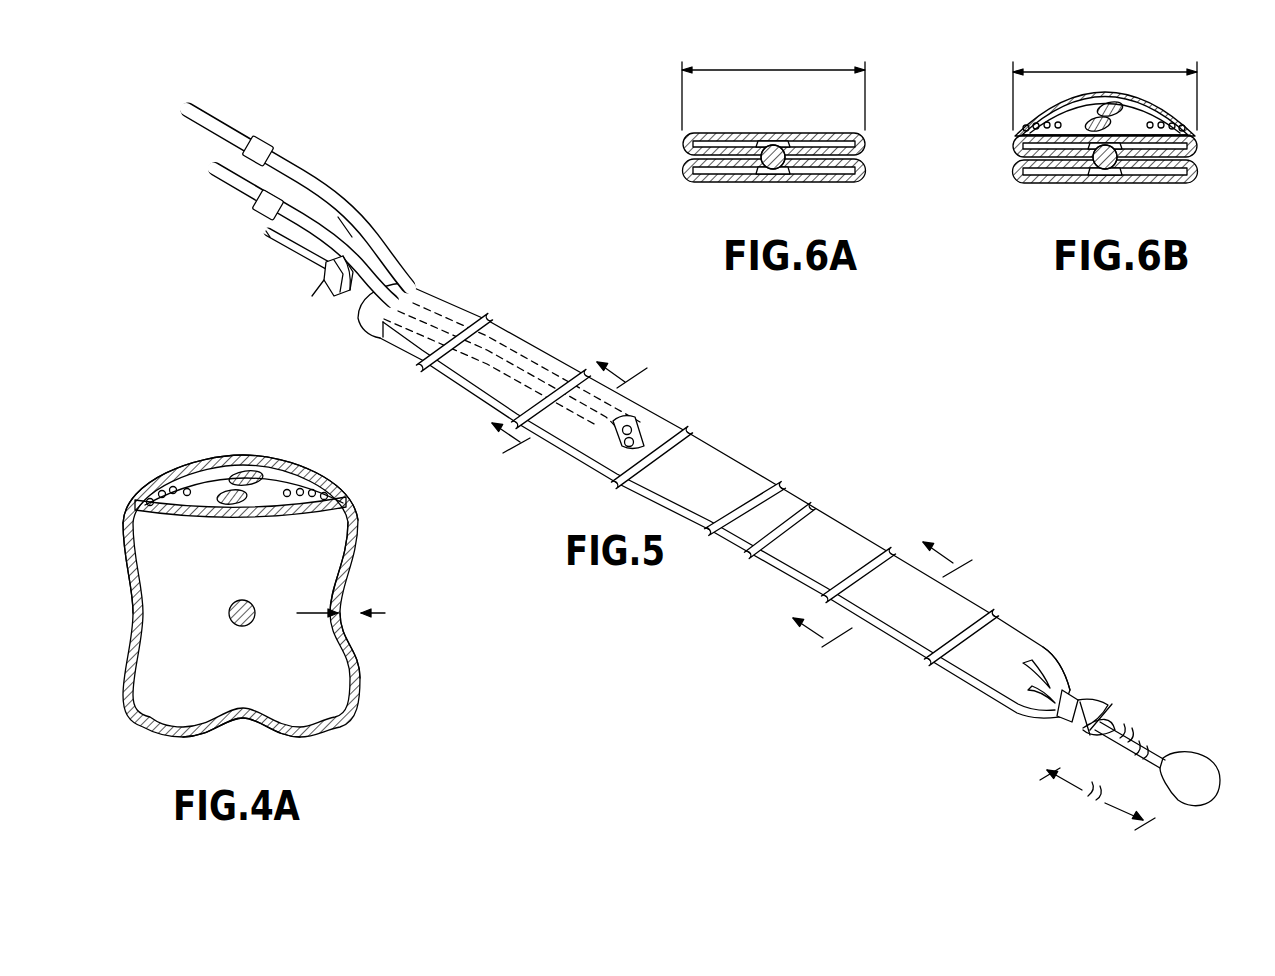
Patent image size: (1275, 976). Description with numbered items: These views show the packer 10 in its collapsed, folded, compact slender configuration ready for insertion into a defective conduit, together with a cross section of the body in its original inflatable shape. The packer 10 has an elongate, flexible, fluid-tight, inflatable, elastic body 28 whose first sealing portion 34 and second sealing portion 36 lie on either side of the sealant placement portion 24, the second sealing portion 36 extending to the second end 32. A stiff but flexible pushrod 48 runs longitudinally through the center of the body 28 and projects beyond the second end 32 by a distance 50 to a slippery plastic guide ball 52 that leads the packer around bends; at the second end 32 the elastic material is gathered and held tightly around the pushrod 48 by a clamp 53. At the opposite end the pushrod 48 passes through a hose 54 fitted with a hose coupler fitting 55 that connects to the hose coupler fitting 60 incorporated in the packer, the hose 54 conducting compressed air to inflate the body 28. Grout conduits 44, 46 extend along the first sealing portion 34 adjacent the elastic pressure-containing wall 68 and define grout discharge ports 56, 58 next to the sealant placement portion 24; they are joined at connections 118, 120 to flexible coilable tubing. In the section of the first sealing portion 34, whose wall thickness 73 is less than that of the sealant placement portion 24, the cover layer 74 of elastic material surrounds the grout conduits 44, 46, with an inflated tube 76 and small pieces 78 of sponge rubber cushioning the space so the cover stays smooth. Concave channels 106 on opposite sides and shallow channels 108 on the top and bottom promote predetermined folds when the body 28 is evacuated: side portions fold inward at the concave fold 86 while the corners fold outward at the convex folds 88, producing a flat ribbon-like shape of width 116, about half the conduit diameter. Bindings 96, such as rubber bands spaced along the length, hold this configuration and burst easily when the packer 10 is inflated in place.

In FIG. 5, the packer 10 is at (838, 455).
In FIG. 5, the sealant placement portion 24 is at (724, 464).
In FIG. 4A, the body 28 is at (135, 728).
In FIG. 5, the body 28 is at (714, 493).
In FIG. 6A, the body 28 is at (772, 160).
In FIG. 6B, the body 28 is at (1104, 148).
In FIG. 5, the second end 32 is at (1072, 670).
In FIG. 5, the first sealing portion 34 is at (520, 345).
In FIG. 5, the second sealing portion 36 is at (1012, 640).
In FIG. 4A, the grout conduit 44 is at (262, 503).
In FIG. 5, the grout conduit 44 is at (298, 189).
In FIG. 6B, the grout conduit 44 is at (1110, 108).
In FIG. 4A, the grout conduit 46 is at (232, 468).
In FIG. 5, the grout conduit 46 is at (296, 236).
In FIG. 6B, the grout conduit 46 is at (1090, 100).
In FIG. 4A, the pushrod 48 is at (242, 626).
In FIG. 5, the pushrod 48 is at (1159, 750).
In FIG. 6A, the pushrod 48 is at (766, 170).
In FIG. 6B, the pushrod 48 is at (1098, 170).
In FIG. 5, the distance 50 is at (1075, 783).
In FIG. 5, the guide ball 52 is at (1192, 808).
In FIG. 5, the clamp 53 is at (1093, 692).
In FIG. 5, the hose 54 is at (318, 277).
In FIG. 5, the hose coupler fitting 55 is at (318, 291).
In FIG. 5, the grout discharge port 56 is at (646, 424).
In FIG. 5, the grout discharge port 58 is at (635, 448).
In FIG. 5, the hose coupler fitting 60 is at (340, 293).
In FIG. 4A, the wall 68 is at (336, 540).
In FIG. 4A, the wall thickness 73 is at (378, 612).
In FIG. 4A, the cover layer 74 is at (343, 481).
In FIG. 4A, the inflated tube 76 is at (203, 512).
In FIG. 4A, the pieces of sponge rubber 78 is at (288, 489).
In FIG. 6B, the pieces of sponge rubber 78 is at (1144, 124).
In FIG. 6A, the inward fold 86 is at (761, 140).
In FIG. 6B, the inward fold 86 is at (1115, 172).
In FIG. 5, the outward fold 88 is at (780, 580).
In FIG. 6A, the outward fold 88 is at (866, 142).
In FIG. 6B, the outward fold 88 is at (1198, 146).
In FIG. 5, the binding 96 is at (490, 312).
In FIG. 4A, the concave channel 106 is at (125, 600).
In FIG. 4A, the shallow channel 108 is at (242, 729).
In FIG. 6A, the width 116 is at (775, 68).
In FIG. 6B, the width 116 is at (1108, 70).
In FIG. 5, the connection 118 is at (260, 139).
In FIG. 5, the connection 120 is at (262, 225).